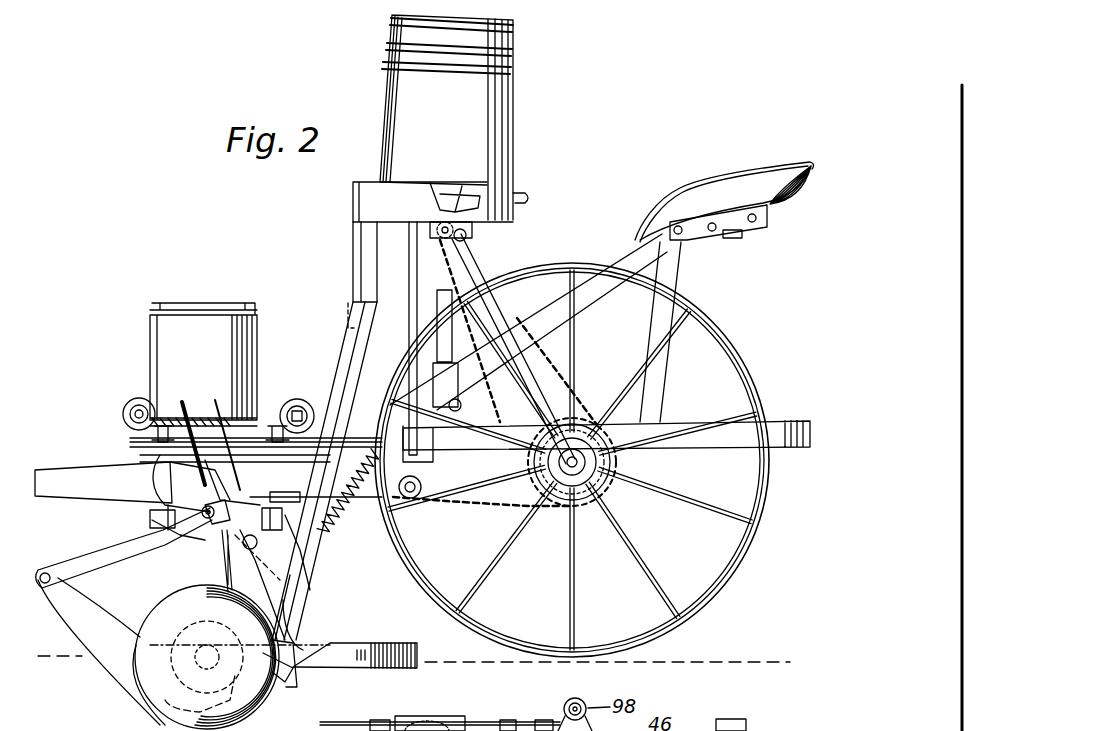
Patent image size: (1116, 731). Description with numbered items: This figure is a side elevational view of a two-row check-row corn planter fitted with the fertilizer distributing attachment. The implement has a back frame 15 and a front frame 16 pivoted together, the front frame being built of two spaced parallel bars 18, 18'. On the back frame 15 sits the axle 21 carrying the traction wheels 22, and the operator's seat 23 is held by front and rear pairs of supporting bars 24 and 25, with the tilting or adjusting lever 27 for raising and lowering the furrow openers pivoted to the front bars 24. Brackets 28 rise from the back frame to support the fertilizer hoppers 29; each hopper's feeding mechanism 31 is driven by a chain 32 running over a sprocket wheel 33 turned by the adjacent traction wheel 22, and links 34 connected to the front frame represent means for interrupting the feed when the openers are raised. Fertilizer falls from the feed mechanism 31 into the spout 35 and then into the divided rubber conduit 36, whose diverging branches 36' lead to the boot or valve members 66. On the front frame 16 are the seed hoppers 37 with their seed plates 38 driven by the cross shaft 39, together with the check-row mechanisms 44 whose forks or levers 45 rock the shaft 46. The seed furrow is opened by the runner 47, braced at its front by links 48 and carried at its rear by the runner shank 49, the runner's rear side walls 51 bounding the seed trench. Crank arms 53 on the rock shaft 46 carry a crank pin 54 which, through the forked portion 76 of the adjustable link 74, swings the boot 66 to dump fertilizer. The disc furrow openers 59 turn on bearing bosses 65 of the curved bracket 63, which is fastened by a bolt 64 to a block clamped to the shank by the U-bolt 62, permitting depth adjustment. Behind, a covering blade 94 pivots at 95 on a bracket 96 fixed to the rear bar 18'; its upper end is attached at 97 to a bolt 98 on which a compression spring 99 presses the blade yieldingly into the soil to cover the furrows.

The back frame 15 is at (805, 423).
The front frame 16 is at (152, 512).
The side bar 18 is at (141, 521).
The rear frame bar 18' is at (287, 561).
The axle 21 is at (495, 388).
The traction wheel 22 is at (433, 592).
The operator's seat 23 is at (775, 205).
The front supporting bars 24 is at (582, 322).
The rear supporting bars 25 is at (680, 280).
The tilting or adjusting lever 27 is at (505, 315).
The bracket 28 is at (397, 338).
The fertilizer hopper 29 is at (515, 158).
The feeding mechanism 31 is at (465, 245).
The chain 32 is at (560, 372).
The sprocket wheel 33 is at (572, 440).
The link 34 is at (356, 274).
The spout or tube 35 is at (358, 245).
The divided duct or conduit 36 is at (324, 471).
The branch conduit 36' is at (322, 607).
The seed hopper 37 is at (262, 318).
The seed plate 38 is at (200, 405).
The cross shaft 39 is at (212, 420).
The check-row mechanism 44 is at (128, 436).
The fork or lever 45 is at (178, 406).
The rock shaft 46 is at (205, 520).
The runner 47 is at (108, 637).
The bracing link 48 is at (78, 565).
The runner shank 49 is at (228, 585).
The side wall 51 is at (300, 683).
The crank arm 53 is at (570, 710).
The crank pin 54 is at (532, 720).
The furrow opener 59 is at (150, 705).
The U-bolt 62 is at (305, 588).
The curved bracket or yoke 63 is at (195, 594).
The bolt 64 is at (205, 637).
The bearing boss 65 is at (200, 664).
The boot or valve member 66 is at (328, 645).
The link 74 is at (222, 545).
The forked portion 76 is at (425, 716).
The covering blade 94 is at (414, 643).
The pivot 95 is at (335, 560).
The bracket 96 is at (300, 540).
The pivotal attachment 97 is at (160, 468).
The bolt 98 is at (348, 490).
The compression spring 99 is at (325, 528).